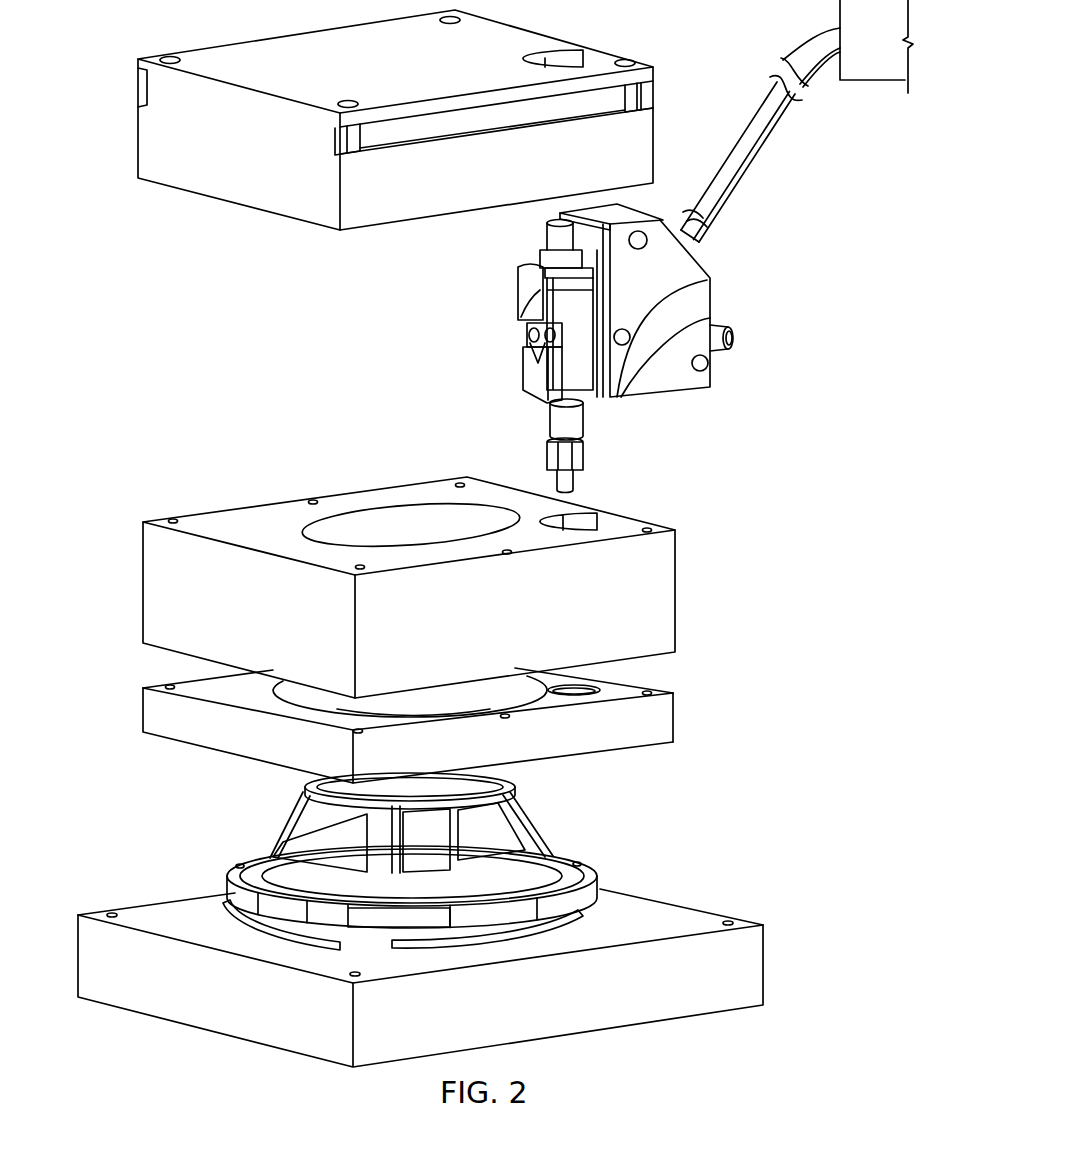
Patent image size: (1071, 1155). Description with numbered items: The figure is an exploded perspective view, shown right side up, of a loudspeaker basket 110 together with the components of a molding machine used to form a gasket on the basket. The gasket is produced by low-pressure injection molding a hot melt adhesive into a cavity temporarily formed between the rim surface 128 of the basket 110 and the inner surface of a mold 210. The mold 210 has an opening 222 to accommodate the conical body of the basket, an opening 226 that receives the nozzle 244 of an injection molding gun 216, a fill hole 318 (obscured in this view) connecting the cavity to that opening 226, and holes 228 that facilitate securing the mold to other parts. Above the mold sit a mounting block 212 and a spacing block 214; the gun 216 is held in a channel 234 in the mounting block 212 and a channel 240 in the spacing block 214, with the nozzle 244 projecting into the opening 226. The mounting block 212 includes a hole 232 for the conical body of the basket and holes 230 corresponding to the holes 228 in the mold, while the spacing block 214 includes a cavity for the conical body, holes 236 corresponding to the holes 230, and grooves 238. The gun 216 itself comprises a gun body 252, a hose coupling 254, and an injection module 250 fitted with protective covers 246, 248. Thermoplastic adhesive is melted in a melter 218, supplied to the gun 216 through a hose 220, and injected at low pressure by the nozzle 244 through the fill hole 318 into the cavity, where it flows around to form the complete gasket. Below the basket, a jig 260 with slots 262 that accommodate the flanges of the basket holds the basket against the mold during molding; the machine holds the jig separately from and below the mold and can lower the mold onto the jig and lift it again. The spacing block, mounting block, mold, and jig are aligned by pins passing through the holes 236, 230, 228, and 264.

The basket 110 is at (548, 818).
The rim surface 128 is at (257, 860).
The mold 210 is at (681, 717).
The mounting block 212 is at (688, 576).
The spacing block 214 is at (665, 122).
The injection molding gun 216 is at (714, 264).
The melter 218 is at (868, 72).
The hose 220 is at (744, 146).
The opening 222 is at (294, 701).
The opening 226 is at (612, 690).
The holes 228 is at (169, 680).
The holes 230 is at (174, 519).
The hole 232 is at (382, 530).
The channel 234 is at (600, 518).
The holes 236 is at (172, 58).
The grooves 238 is at (388, 130).
The channel 240 is at (574, 60).
The nozzle 244 is at (572, 483).
The protective cover 246 is at (537, 377).
The protective cover 248 is at (524, 287).
The injection module 250 is at (577, 297).
The gun body 252 is at (693, 297).
The hose coupling 254 is at (700, 233).
The jig 260 is at (656, 904).
The slots 262 is at (575, 928).
The holes 264 is at (732, 921).
The fill hole 318 is at (643, 750).